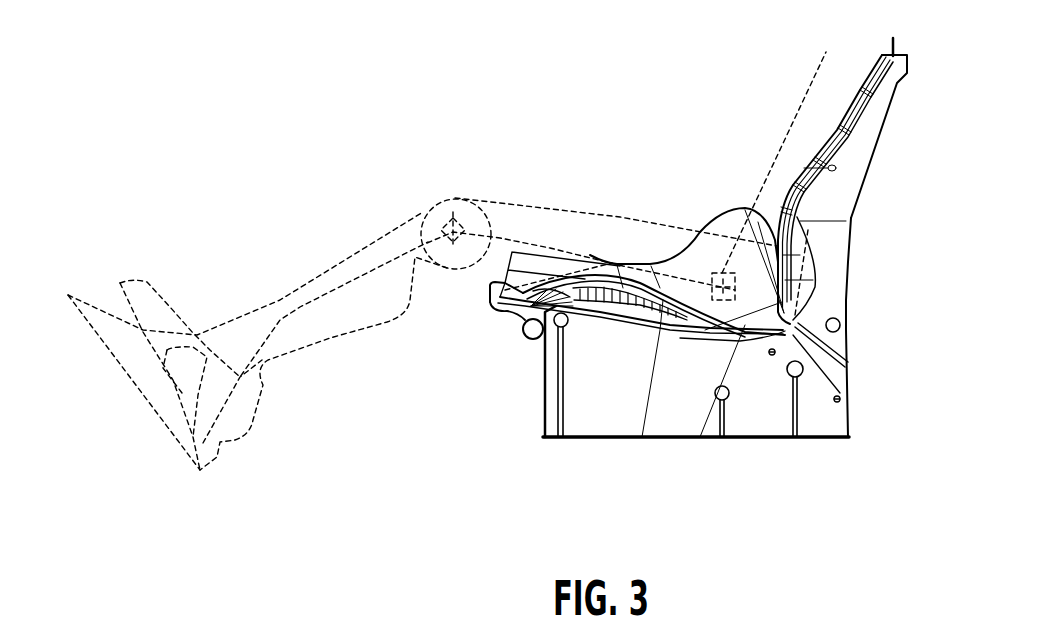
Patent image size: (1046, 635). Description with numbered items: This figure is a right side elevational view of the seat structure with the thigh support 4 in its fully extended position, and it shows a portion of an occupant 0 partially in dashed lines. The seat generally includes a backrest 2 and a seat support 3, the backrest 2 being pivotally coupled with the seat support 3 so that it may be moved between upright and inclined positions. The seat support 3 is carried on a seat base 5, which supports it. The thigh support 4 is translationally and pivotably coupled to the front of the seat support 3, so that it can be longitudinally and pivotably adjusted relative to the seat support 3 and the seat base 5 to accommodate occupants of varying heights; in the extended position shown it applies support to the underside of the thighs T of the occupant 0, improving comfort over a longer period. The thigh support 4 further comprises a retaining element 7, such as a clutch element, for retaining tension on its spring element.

The occupant 0 is at (322, 188).
The thighs T is at (545, 228).
The backrest 2 is at (873, 115).
The seat support 3 is at (647, 292).
The thigh support 4 is at (491, 293).
The seat base 5 is at (827, 420).
The retaining element 7 is at (537, 332).